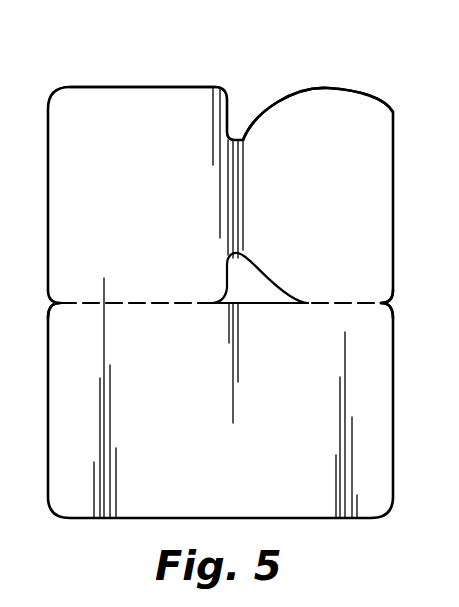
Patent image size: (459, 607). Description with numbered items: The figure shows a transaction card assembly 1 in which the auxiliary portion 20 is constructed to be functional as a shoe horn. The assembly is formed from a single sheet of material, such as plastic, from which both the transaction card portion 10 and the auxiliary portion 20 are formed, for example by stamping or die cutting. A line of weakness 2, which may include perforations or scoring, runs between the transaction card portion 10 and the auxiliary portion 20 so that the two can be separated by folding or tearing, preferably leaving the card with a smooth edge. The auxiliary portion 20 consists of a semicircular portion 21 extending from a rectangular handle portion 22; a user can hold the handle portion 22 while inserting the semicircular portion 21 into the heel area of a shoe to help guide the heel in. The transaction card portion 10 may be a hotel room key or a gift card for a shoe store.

The transaction card assembly 1 is at (67, 77).
The line of weakness 2 is at (363, 303).
The transaction card portion 10 is at (377, 405).
The auxiliary portion 20 is at (375, 128).
The semicircular portion 21 is at (343, 103).
The rectangular handle portion 22 is at (130, 97).